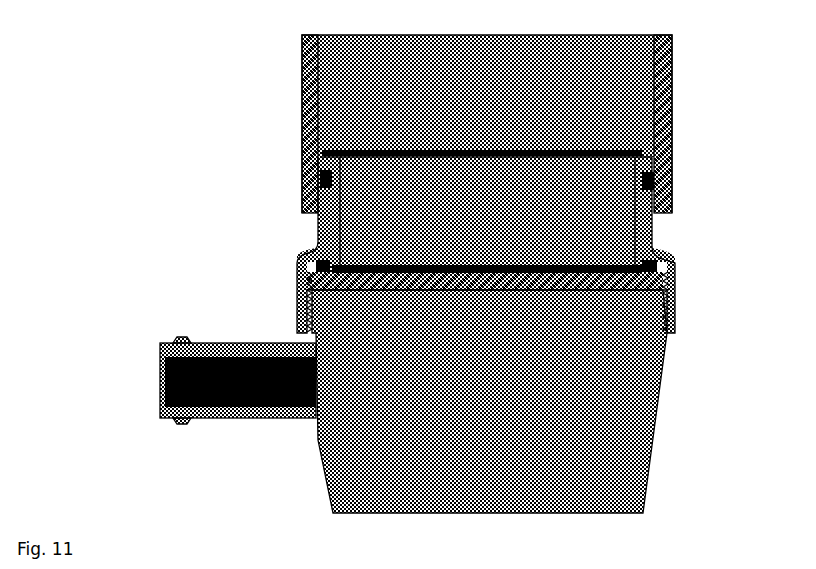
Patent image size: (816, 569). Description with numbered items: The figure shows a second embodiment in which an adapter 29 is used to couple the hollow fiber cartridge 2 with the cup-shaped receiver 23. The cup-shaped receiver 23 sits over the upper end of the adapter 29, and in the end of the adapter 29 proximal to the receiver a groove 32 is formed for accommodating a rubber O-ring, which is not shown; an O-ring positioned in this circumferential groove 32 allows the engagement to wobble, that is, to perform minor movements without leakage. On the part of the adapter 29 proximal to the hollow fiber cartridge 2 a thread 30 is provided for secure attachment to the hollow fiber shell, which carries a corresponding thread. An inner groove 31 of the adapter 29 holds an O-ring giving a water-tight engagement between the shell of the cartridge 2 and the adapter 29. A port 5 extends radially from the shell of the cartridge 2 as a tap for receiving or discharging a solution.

The cup-shaped receiver 23 is at (672, 122).
The adapter 29 is at (677, 256).
The groove 32 is at (653, 177).
The inner groove 31 is at (652, 273).
The thread 30 is at (668, 305).
The hollow fiber cartridge 2 is at (658, 490).
The port 5 is at (250, 425).